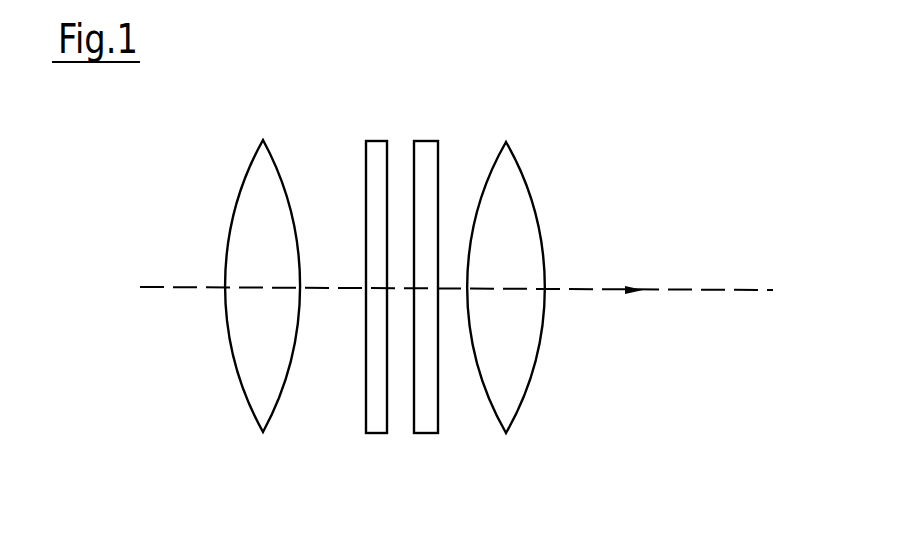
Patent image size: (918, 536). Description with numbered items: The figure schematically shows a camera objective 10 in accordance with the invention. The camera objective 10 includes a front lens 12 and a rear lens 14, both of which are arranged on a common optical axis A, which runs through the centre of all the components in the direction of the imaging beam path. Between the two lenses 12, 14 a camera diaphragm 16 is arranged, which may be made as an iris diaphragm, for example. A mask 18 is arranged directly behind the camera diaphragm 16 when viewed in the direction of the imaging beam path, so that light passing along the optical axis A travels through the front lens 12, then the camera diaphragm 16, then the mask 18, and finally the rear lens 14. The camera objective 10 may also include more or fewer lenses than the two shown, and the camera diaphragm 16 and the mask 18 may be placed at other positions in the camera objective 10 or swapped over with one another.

The camera objective 10 is at (556, 130).
The front lens 12 is at (257, 395).
The rear lens 14 is at (505, 402).
The camera diaphragm 16 is at (376, 423).
The mask 18 is at (424, 423).
The optical axis A is at (727, 291).